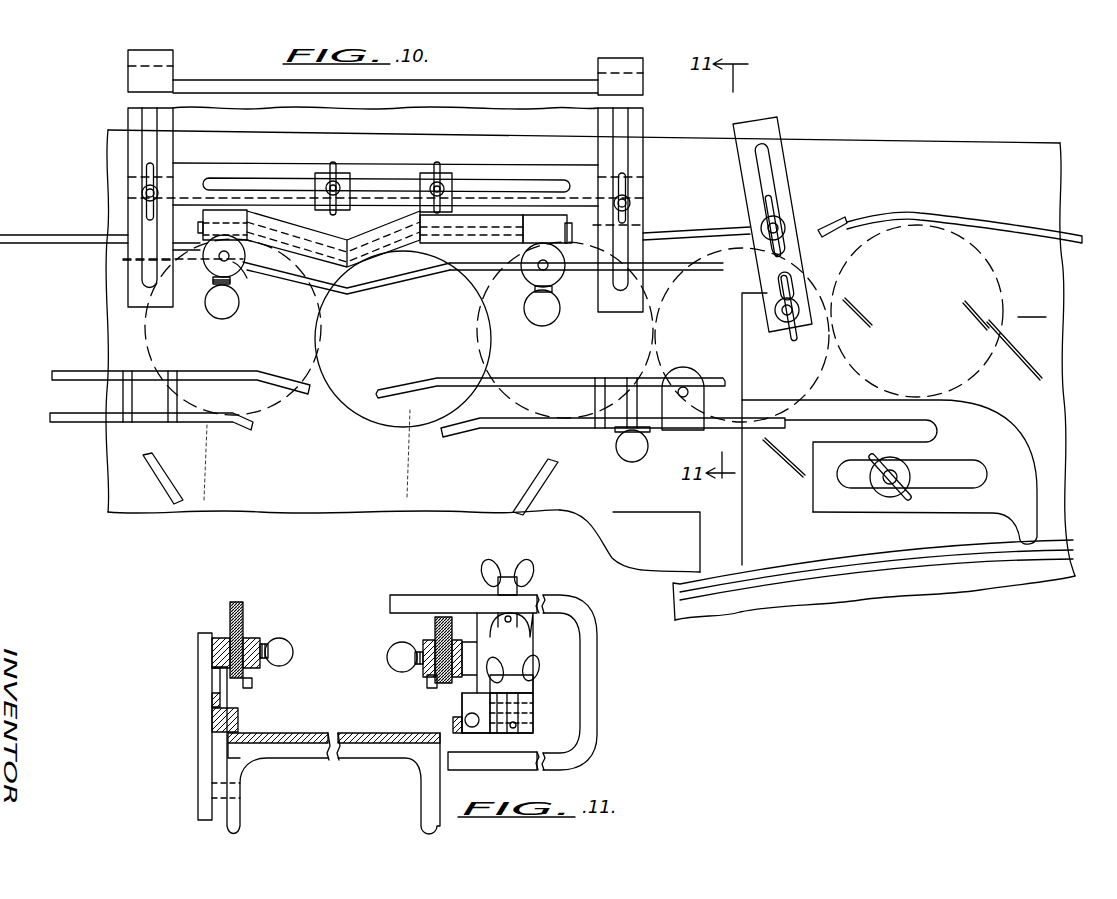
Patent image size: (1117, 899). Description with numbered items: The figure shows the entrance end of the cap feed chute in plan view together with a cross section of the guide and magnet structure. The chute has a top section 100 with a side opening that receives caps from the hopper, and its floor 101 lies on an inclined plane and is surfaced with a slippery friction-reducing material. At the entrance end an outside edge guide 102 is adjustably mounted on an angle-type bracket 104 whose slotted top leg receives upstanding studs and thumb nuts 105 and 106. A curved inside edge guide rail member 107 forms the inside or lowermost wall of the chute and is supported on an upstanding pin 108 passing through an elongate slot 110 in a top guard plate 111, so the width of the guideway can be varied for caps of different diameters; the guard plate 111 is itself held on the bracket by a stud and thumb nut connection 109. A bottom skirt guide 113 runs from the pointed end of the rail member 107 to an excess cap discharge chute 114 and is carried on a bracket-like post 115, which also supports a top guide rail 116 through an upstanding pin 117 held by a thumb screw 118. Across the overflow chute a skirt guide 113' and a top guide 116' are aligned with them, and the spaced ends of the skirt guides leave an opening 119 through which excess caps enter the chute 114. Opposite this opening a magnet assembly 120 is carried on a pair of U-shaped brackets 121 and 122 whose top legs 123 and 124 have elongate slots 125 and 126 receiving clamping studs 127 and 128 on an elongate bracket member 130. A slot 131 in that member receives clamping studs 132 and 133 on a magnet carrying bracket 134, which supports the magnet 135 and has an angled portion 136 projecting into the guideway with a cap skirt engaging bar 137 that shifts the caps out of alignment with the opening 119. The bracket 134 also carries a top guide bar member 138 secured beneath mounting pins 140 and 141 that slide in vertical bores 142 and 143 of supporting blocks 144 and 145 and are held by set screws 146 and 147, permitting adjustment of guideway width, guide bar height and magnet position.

In FIG. 10, the top section 100 is at (873, 186).
In FIG. 11, the bottom or floor 101 is at (320, 733).
In FIG. 10, the outside edge guide 102 is at (996, 216).
In FIG. 10, the angle-type bracket 104 is at (780, 120).
In FIG. 10, the thumb nut 105 is at (784, 226).
In FIG. 10, the thumb nut 106 is at (758, 226).
In FIG. 10, the curved inside edge guide rail member 107 is at (850, 400).
In FIG. 11, the curved inside edge guide rail member 107 is at (238, 722).
In FIG. 10, the upstanding pin 108 is at (878, 484).
In FIG. 10, the stud and thumb nut connection 109 is at (783, 332).
In FIG. 10, the elongate slot 110 is at (940, 464).
In FIG. 10, the top guard plate 111 is at (1036, 306).
In FIG. 10, the inside edge or bottom skirt guide 113 is at (613, 407).
In FIG. 11, the inside edge or bottom skirt guide 113 is at (194, 676).
In FIG. 10, the skirt guide 113' is at (154, 405).
In FIG. 10, the excess or overflow cap discharge chute 114 is at (530, 486).
In FIG. 10, the bracket-like post 115 is at (697, 432).
In FIG. 11, the bracket-like post 115 is at (200, 744).
In FIG. 10, the top guide or guard rail 116 is at (550, 369).
In FIG. 11, the top guide or guard rail 116 is at (273, 685).
In FIG. 10, the top guide 116' is at (181, 381).
In FIG. 11, the upstanding pin 117 is at (244, 612).
In FIG. 11, the thumb screw 118 is at (293, 652).
In FIG. 10, the opening or entrance 119 is at (300, 510).
In FIG. 10, the magnet assembly 120 is at (293, 156).
In FIG. 10, the U-shaped bracket 121 is at (643, 77).
In FIG. 11, the U-shaped bracket 121 is at (590, 746).
In FIG. 10, the U-shaped bracket 122 is at (175, 58).
In FIG. 10, the top leg 123 is at (633, 296).
In FIG. 11, the top leg 123 is at (410, 602).
In FIG. 10, the top leg 124 is at (128, 292).
In FIG. 10, the elongate slot 125 is at (620, 248).
In FIG. 10, the elongate slot 126 is at (142, 272).
In FIG. 10, the clamping stud 127 is at (630, 203).
In FIG. 11, the clamping stud 127 is at (532, 586).
In FIG. 10, the clamping stud 128 is at (142, 193).
In FIG. 10, the elongate bracket member 130 is at (240, 164).
In FIG. 10, the elongate slot 131 is at (390, 178).
In FIG. 10, the clamping stud 132 is at (440, 186).
In FIG. 11, the clamping stud 132 is at (522, 688).
In FIG. 10, the clamping stud 133 is at (338, 185).
In FIG. 10, the magnet carrying bracket 134 is at (435, 245).
In FIG. 11, the magnet carrying bracket 134 is at (470, 699).
In FIG. 10, the magnet 135 is at (466, 215).
In FIG. 10, the angled or bowed portion 136 is at (305, 247).
In FIG. 10, the cap skirt engaging bar 137 is at (682, 232).
In FIG. 11, the cap skirt engaging bar 137 is at (454, 726).
In FIG. 10, the top guide bar member 138 is at (490, 268).
In FIG. 11, the top guide bar member 138 is at (425, 686).
In FIG. 10, the mounting pin 140 is at (548, 270).
In FIG. 11, the mounting pin 140 is at (442, 617).
In FIG. 10, the mounting pin 141 is at (218, 262).
In FIG. 11, the vertical bore 142 is at (440, 626).
In FIG. 10, the vertical bore 143 is at (258, 275).
In FIG. 10, the supporting block 144 is at (528, 240).
In FIG. 11, the supporting block 144 is at (465, 645).
In FIG. 10, the supporting block 145 is at (244, 236).
In FIG. 10, the set screw 146 is at (540, 318).
In FIG. 11, the set screw 146 is at (387, 660).
In FIG. 10, the set screw 147 is at (228, 306).